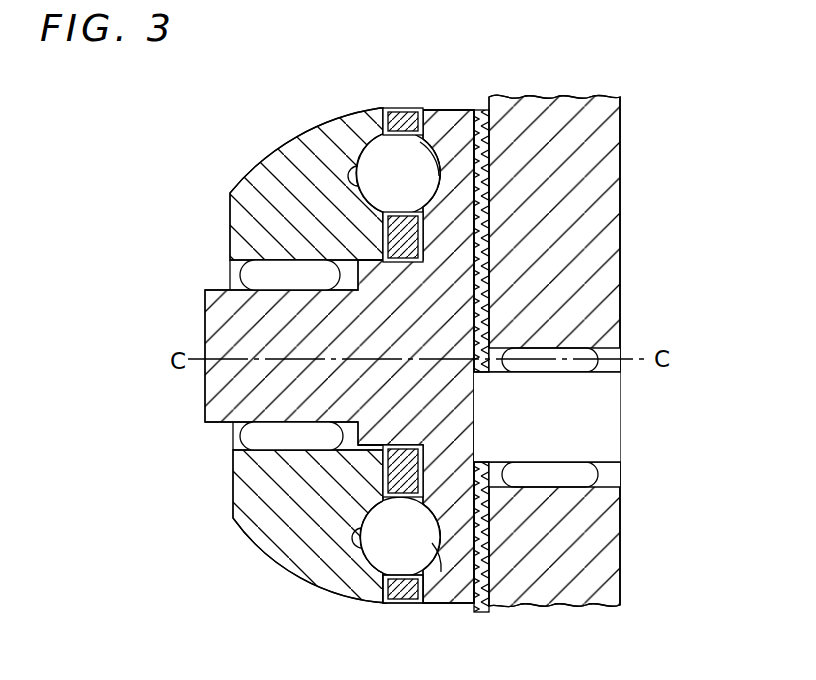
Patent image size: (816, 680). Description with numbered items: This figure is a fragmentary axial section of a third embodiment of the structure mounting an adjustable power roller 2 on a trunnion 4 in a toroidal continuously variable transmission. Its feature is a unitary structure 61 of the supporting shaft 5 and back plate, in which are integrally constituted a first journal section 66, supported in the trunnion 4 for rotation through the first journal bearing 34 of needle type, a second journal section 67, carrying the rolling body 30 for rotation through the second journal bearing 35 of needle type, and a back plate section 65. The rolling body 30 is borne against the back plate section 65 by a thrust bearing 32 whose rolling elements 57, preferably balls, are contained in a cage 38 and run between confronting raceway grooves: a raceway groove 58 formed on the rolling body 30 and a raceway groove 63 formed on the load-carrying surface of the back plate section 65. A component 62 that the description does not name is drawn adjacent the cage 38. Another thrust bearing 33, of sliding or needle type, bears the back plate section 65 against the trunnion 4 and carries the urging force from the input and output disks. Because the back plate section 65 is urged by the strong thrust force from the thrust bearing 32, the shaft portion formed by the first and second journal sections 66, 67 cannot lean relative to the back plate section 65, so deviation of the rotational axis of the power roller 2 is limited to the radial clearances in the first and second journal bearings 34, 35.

The power roller 2 is at (250, 163).
The trunnion 4 is at (572, 148).
The supporting shaft 5 is at (634, 395).
The rolling body 30 is at (288, 497).
The thrust bearing 32 is at (357, 145).
The thrust bearing 33 is at (483, 203).
The first journal bearing 34 is at (577, 355).
The second journal bearing 35 is at (263, 275).
The cage 38 is at (400, 603).
The rolling elements 57 is at (381, 153).
The raceway groove 58 is at (378, 143).
The unitary structure of the supporting shaft and back plate 61 is at (437, 288).
The cage 62 is at (409, 131).
The raceway groove 63 is at (400, 110).
The back plate section 65 is at (445, 133).
The first journal section 66 is at (570, 415).
The second journal section 67 is at (282, 347).